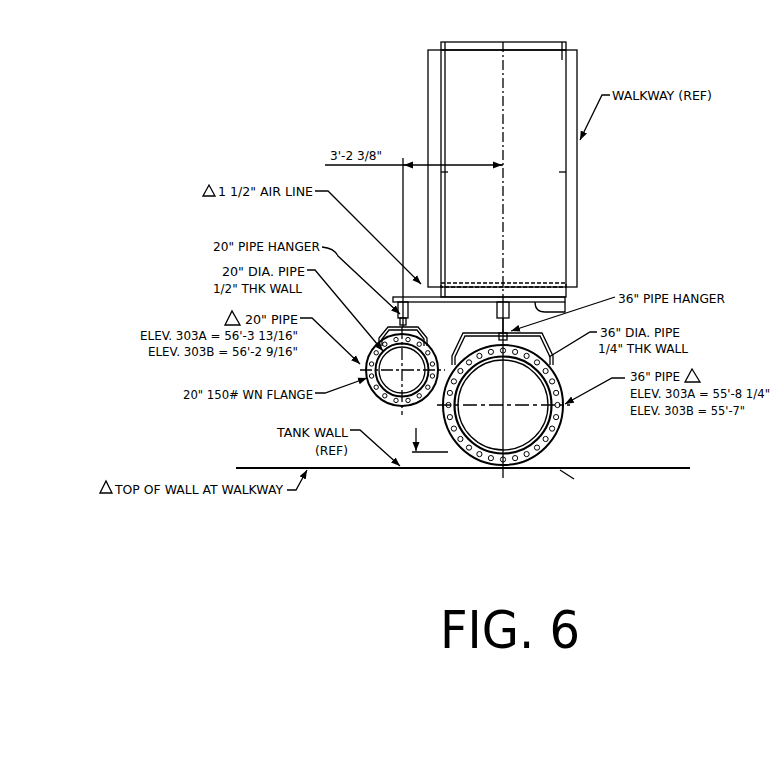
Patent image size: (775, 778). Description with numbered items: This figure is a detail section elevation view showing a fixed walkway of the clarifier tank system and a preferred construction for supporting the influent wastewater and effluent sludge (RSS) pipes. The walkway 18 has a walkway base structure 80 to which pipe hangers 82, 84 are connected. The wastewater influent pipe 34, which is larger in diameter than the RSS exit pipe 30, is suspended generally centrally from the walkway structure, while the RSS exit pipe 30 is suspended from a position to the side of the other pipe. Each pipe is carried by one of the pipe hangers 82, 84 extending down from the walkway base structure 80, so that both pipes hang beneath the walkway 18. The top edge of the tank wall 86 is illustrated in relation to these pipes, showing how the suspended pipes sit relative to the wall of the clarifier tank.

The walkway 18 is at (581, 73).
The RSS exit pipe 30 is at (375, 392).
The wastewater influent pipe 34 is at (553, 425).
The walkway base structure 80 is at (512, 328).
The pipe hanger 82 is at (396, 313).
The pipe hanger 84 is at (512, 334).
The top edge of the tank wall 86 is at (565, 468).